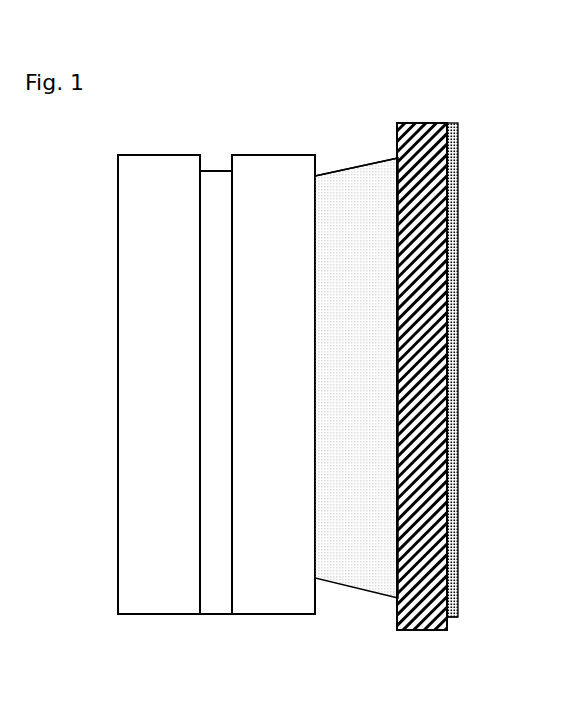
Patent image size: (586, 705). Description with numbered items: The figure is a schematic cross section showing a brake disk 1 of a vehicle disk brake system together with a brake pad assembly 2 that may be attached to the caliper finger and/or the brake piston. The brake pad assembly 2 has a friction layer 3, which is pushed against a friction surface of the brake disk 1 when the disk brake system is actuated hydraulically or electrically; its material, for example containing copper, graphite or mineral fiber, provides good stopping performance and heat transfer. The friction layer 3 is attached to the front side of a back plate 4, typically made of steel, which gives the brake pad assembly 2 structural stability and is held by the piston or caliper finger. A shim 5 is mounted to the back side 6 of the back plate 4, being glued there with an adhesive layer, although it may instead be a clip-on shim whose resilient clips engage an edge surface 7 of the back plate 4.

The brake disk 1 is at (258, 168).
The brake pad assembly 2 is at (350, 617).
The friction layer 3 is at (362, 177).
The back plate 4 is at (410, 607).
The shim 5 is at (457, 492).
The back side 6 is at (448, 625).
The edge surface 7 is at (418, 123).